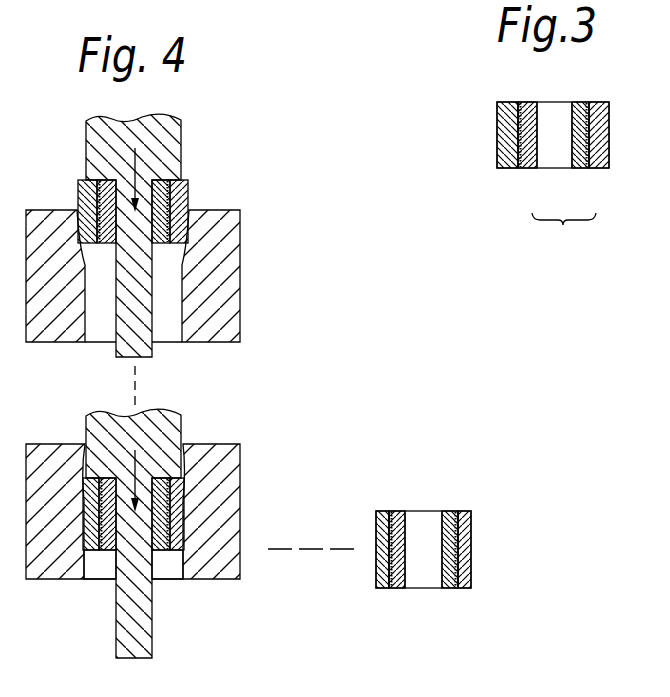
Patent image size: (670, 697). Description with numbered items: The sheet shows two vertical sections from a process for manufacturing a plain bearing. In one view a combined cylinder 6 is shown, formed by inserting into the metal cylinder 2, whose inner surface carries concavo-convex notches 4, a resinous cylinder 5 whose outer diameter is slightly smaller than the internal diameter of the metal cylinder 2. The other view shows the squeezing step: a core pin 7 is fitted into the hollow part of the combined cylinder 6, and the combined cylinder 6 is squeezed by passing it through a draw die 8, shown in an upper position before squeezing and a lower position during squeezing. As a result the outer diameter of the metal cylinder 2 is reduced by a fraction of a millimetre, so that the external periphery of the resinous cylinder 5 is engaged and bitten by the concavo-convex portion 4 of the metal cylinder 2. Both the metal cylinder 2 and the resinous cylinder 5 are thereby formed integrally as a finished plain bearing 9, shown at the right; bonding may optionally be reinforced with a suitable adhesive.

In FIG. 4, the metal cylinder 2 is at (182, 190).
In FIG. 3, the metal cylinder 2 is at (597, 167).
In FIG. 4, the concavo-convex notches 4 is at (153, 181).
In FIG. 3, the concavo-convex notches 4 is at (588, 123).
In FIG. 4, the resinous cylinder 5 is at (97, 176).
In FIG. 3, the resinous cylinder 5 is at (525, 168).
In FIG. 4, the combined cylinder 6 is at (100, 563).
In FIG. 3, the combined cylinder 6 is at (553, 177).
In FIG. 4, the core pin 7 is at (143, 347).
In FIG. 4, the draw die 8 is at (222, 278).
In FIG. 4, the finished plain bearing 9 is at (417, 606).